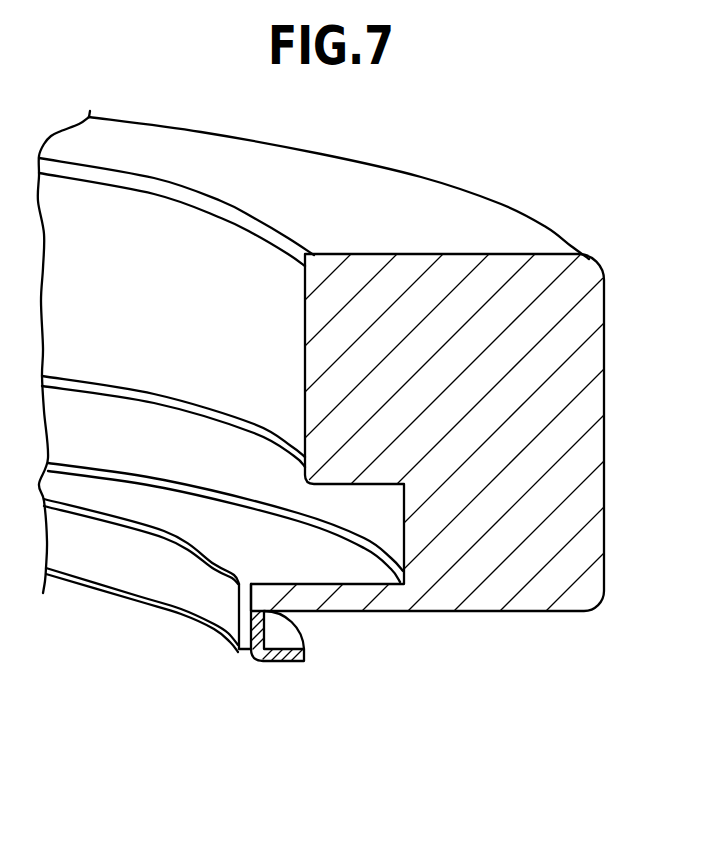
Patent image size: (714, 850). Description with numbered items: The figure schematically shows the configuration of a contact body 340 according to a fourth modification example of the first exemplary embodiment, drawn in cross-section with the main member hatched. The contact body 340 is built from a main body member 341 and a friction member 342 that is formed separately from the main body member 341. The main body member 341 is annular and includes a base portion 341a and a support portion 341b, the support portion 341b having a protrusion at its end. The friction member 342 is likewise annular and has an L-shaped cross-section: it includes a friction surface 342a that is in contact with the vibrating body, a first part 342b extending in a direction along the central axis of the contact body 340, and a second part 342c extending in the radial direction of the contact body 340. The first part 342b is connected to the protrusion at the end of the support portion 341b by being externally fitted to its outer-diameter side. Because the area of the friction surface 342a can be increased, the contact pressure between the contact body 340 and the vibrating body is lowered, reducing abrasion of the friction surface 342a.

The contact body 340 is at (346, 532).
The main body member 341 is at (427, 509).
The base portion 341a is at (542, 597).
The support portion 341b is at (357, 648).
The friction member 342 is at (230, 674).
The friction surface 342a is at (268, 662).
The first part 342b is at (250, 620).
The second part 342c is at (238, 593).